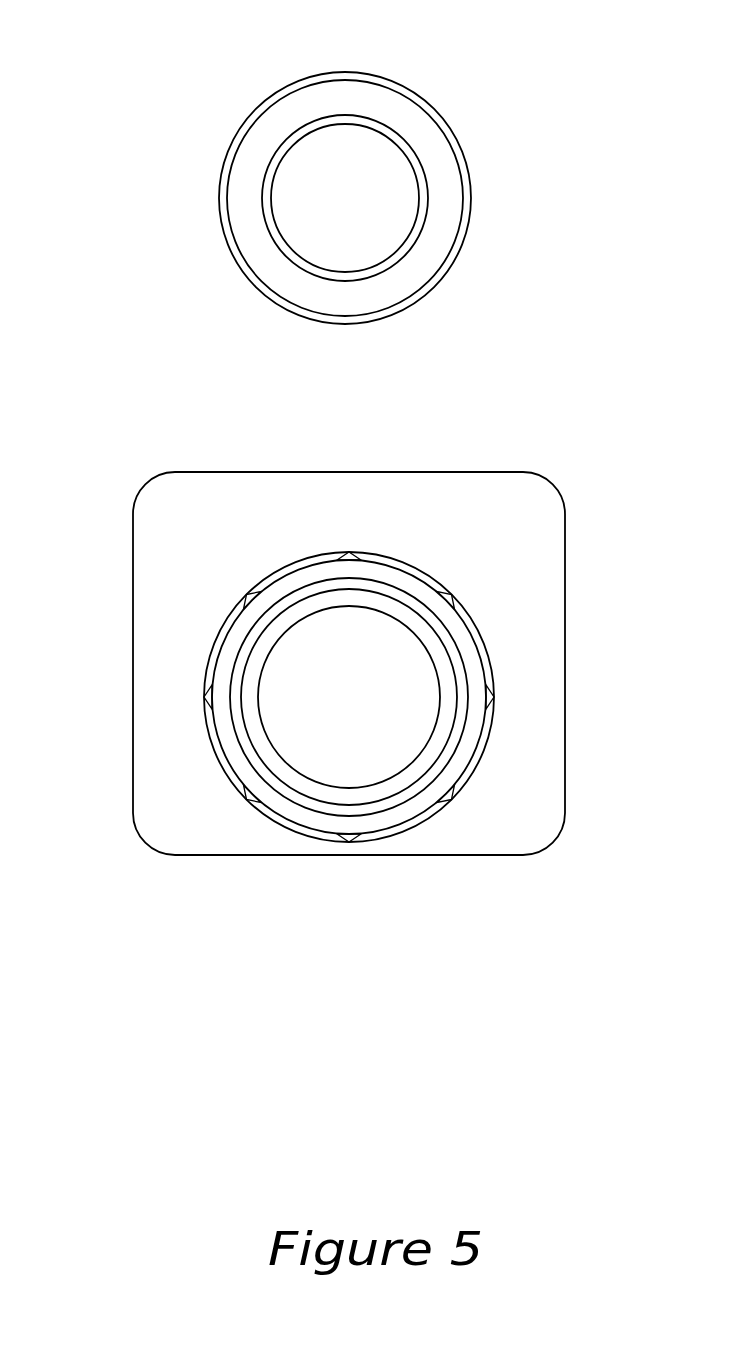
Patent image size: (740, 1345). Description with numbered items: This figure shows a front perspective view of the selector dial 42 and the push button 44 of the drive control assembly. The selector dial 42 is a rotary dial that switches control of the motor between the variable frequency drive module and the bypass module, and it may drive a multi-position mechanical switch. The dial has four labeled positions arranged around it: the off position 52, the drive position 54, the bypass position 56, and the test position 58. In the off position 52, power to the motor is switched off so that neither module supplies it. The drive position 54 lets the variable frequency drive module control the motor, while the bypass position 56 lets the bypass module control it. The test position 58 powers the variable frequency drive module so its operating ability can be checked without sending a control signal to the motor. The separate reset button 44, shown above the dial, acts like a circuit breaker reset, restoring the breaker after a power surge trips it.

The selector dial 42 is at (516, 676).
The reset button 44 is at (464, 69).
The off position 52 is at (163, 583).
The drive position 54 is at (248, 512).
The bypass position 56 is at (448, 512).
The test position 58 is at (513, 583).